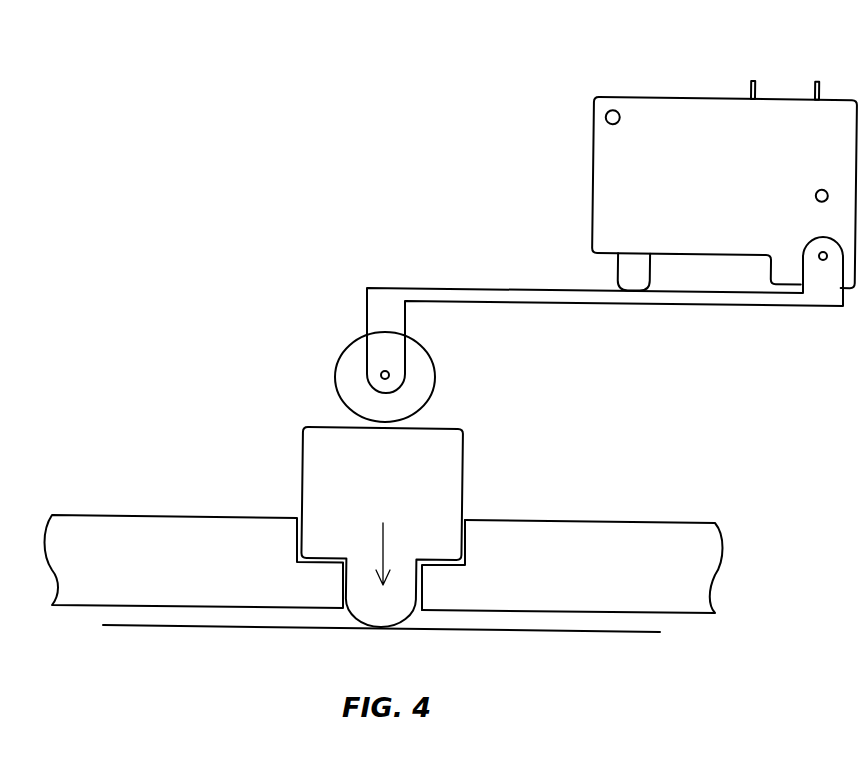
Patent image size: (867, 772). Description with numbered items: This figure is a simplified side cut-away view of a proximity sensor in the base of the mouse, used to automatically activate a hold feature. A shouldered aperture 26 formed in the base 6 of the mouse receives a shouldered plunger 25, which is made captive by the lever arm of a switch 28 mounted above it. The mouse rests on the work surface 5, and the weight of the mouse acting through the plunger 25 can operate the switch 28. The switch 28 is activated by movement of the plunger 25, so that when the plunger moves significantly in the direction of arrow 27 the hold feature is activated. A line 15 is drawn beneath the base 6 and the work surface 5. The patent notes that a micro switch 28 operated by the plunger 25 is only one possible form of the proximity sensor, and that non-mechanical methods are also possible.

The switch 28 is at (592, 210).
The shouldered plunger 25 is at (456, 462).
The arrow 27 is at (385, 540).
The shouldered aperture 26 is at (423, 585).
The bottom surface 6 is at (677, 530).
The work surface 5 is at (122, 625).
The rail 15 is at (692, 615).